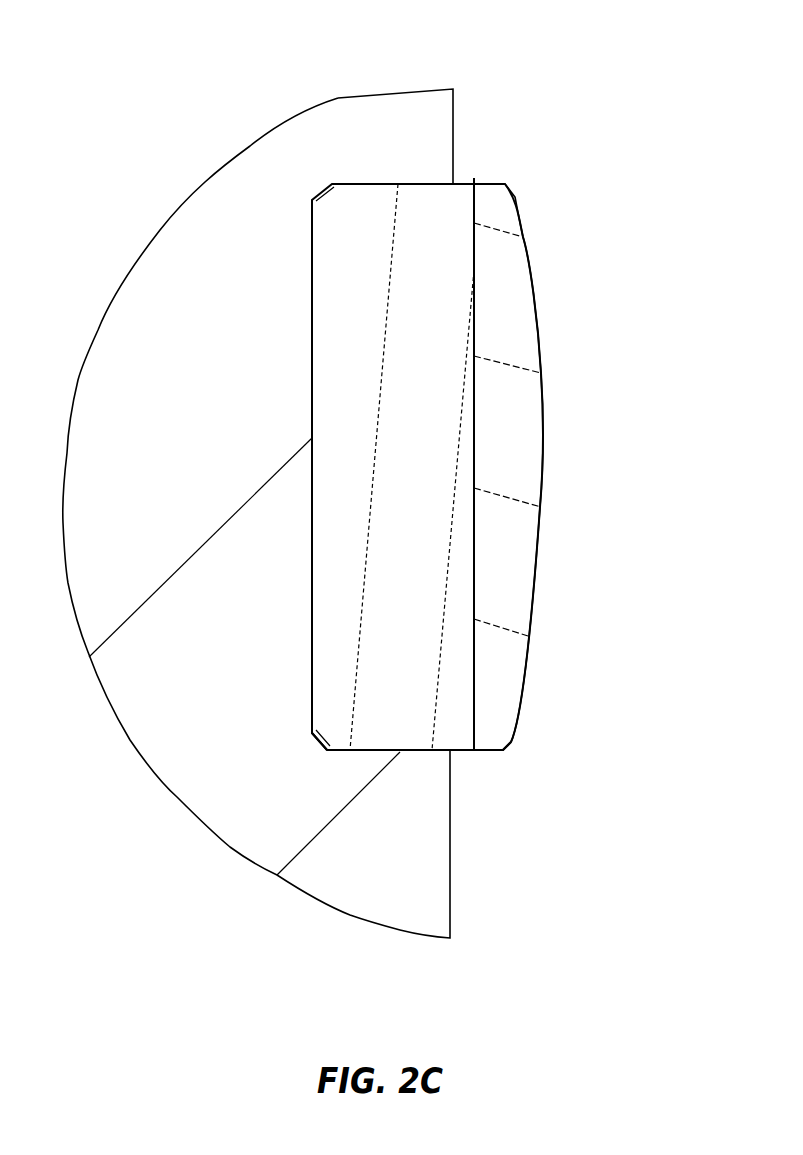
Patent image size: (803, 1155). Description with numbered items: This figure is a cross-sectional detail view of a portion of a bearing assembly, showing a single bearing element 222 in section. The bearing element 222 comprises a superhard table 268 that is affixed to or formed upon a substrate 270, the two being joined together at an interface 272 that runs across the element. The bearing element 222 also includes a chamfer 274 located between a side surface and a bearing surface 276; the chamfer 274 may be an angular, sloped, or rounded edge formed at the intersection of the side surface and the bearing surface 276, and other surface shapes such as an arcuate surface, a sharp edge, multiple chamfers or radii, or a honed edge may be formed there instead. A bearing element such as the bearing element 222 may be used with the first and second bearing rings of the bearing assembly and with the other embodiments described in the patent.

The bearing element 222 is at (510, 168).
The superhard table 268 is at (503, 600).
The substrate 270 is at (358, 237).
The interface 272 is at (472, 256).
The chamfer 274 is at (510, 750).
The bearing surface 276 is at (538, 318).